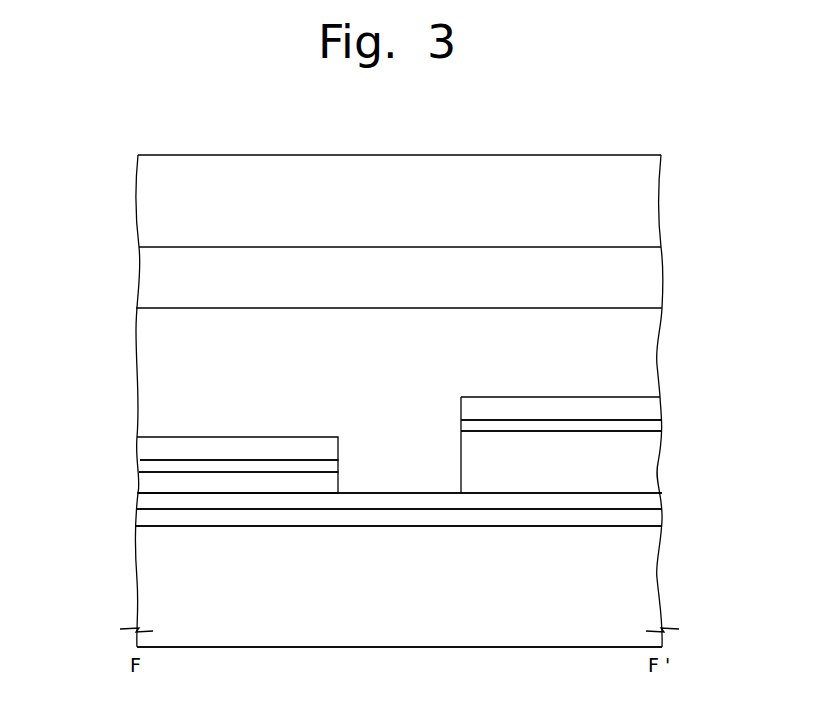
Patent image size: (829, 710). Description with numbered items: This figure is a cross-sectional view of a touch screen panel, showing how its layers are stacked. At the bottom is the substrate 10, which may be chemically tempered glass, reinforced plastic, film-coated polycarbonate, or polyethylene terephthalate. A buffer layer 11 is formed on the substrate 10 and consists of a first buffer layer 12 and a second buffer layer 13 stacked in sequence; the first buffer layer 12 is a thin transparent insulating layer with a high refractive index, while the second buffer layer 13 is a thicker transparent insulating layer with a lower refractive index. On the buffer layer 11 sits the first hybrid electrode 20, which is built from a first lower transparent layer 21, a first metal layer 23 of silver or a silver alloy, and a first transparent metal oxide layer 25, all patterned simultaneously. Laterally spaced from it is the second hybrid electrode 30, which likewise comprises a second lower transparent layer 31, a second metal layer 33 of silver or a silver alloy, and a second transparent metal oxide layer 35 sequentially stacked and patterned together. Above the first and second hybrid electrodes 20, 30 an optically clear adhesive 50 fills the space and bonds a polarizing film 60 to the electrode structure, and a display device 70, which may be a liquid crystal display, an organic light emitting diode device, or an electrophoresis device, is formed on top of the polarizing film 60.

The substrate 10 is at (650, 578).
The buffer layer 11 is at (455, 518).
The first buffer layer 12 is at (650, 522).
The second buffer layer 13 is at (650, 498).
The first hybrid electrode 20 is at (184, 475).
The first lower transparent layer 21 is at (150, 482).
The first metal layer 23 is at (150, 465).
The first transparent metal oxide layer 25 is at (150, 447).
The second hybrid electrode 30 is at (618, 442).
The second lower transparent layer 31 is at (728, 392).
The second metal layer 33 is at (650, 428).
The second transparent metal oxide layer 35 is at (650, 405).
The optically clear adhesive 50 is at (650, 353).
The polarizing film 60 is at (650, 278).
The display device 70 is at (650, 203).